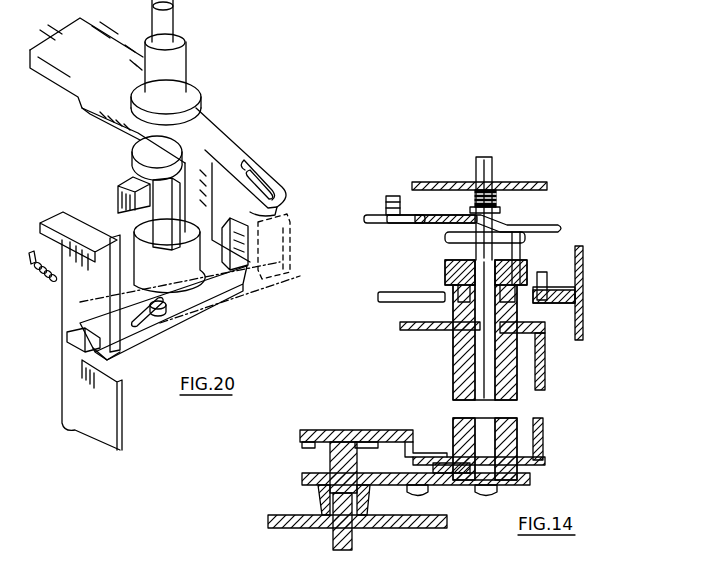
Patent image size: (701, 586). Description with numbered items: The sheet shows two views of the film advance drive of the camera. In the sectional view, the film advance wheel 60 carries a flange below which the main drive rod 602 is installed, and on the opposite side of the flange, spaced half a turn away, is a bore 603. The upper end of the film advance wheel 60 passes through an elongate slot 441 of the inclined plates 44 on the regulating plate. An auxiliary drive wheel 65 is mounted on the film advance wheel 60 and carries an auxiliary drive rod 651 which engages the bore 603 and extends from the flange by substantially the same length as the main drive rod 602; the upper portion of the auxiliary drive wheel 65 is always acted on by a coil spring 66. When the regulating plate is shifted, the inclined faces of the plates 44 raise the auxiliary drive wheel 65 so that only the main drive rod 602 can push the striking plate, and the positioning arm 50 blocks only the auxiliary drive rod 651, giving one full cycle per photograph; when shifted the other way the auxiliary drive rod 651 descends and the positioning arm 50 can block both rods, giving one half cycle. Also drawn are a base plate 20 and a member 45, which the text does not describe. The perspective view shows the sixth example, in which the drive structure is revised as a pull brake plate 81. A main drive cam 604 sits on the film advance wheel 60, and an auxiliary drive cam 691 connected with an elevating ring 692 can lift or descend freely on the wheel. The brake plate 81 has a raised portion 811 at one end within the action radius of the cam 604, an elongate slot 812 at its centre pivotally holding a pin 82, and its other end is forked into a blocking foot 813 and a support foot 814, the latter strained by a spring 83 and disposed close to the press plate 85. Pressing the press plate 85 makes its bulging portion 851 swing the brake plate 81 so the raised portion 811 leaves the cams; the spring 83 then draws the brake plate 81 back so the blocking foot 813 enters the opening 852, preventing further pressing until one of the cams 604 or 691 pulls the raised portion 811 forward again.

In FIG. 20, the elevating ring 692 is at (196, 82).
In FIG. 20, the auxiliary drive cam 691 is at (245, 306).
In FIG. 20, the raised portion 811 is at (255, 270).
In FIG. 20, the film advance wheel 60 is at (148, 233).
In FIG. 14, the film advance wheel 60 is at (483, 394).
In FIG. 20, the main drive cam 604 is at (122, 184).
In FIG. 20, the press plate 85 is at (75, 215).
In FIG. 20, the bulging portion 851 is at (118, 288).
In FIG. 20, the opening 852 is at (115, 380).
In FIG. 20, the support foot 814 is at (70, 342).
In FIG. 20, the spring 83 is at (33, 285).
In FIG. 20, the brake plate 81 is at (205, 300).
In FIG. 20, the pin 82 is at (160, 322).
In FIG. 20, the elongate slot 812 is at (193, 312).
In FIG. 20, the blocking foot 813 is at (115, 352).
In FIG. 14, the stop member 45 is at (395, 196).
In FIG. 14, the base plate 20 is at (465, 522).
In FIG. 14, the coil spring 66 is at (475, 200).
In FIG. 14, the inclined plates 44 is at (505, 224).
In FIG. 14, the elongate slot 441 is at (547, 228).
In FIG. 14, the auxiliary drive wheel 65 is at (446, 237).
In FIG. 14, the auxiliary drive rod 651 is at (521, 249).
In FIG. 14, the main drive rod 602 is at (466, 292).
In FIG. 14, the bore 603 is at (512, 288).
In FIG. 14, the positioning arm 50 is at (562, 287).